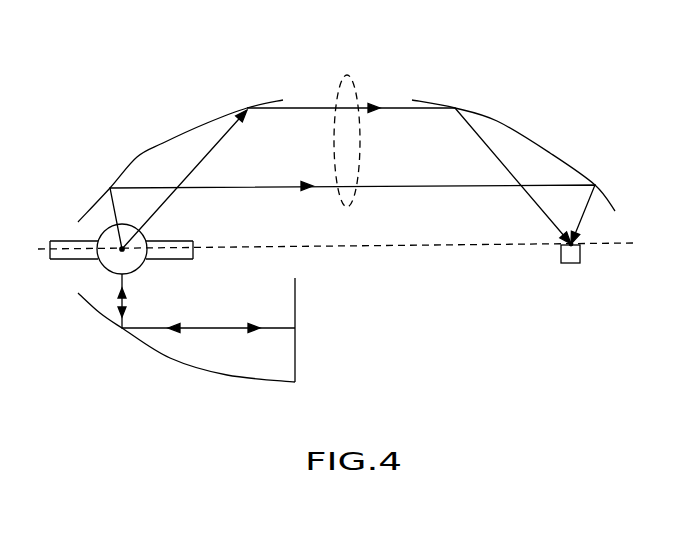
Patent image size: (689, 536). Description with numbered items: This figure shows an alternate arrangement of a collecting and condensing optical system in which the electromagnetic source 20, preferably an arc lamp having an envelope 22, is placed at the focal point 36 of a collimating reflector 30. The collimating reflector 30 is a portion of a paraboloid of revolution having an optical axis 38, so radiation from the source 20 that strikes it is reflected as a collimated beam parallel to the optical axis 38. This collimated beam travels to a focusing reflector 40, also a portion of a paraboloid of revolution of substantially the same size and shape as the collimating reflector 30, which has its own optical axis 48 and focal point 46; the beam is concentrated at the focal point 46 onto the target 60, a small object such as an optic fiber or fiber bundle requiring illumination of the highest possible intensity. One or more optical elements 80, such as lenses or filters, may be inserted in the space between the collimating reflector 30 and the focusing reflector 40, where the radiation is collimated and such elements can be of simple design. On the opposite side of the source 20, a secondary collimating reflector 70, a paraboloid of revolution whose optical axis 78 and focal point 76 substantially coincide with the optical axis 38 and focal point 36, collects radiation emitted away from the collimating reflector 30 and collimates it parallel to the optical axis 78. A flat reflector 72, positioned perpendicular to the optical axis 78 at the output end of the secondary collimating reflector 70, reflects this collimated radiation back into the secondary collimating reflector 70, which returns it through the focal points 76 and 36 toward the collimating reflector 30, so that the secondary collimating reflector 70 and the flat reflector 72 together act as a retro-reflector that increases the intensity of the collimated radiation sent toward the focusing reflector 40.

The electromagnetic source 20 is at (157, 241).
The envelope 22 is at (128, 223).
The collimating reflector 30 is at (163, 143).
The focal point 36 is at (120, 249).
The optical axis 38 is at (238, 246).
The focusing reflector 40 is at (530, 125).
The focal point 46 is at (574, 243).
The optical axis 48 is at (458, 243).
The target 60 is at (580, 257).
The secondary collimating reflector 70 is at (167, 357).
The flat reflector 72 is at (295, 347).
The focal point 76 is at (120, 249).
The optical axis 78 is at (347, 250).
The optical elements 80 is at (348, 75).